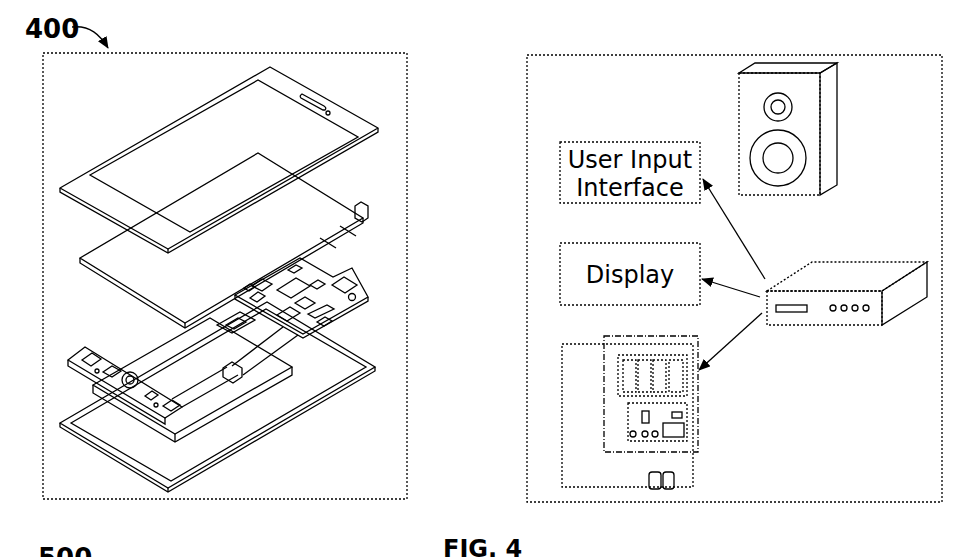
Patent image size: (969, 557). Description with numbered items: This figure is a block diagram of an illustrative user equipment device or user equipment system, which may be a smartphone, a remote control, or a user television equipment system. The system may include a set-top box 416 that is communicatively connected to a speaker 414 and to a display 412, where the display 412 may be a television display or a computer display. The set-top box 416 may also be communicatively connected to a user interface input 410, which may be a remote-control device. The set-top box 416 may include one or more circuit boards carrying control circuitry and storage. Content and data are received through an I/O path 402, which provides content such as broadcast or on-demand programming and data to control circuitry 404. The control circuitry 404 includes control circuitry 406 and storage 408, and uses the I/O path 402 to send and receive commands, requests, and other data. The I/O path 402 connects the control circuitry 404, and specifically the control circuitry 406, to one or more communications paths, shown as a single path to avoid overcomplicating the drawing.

The I/O path 402 is at (120, 390).
The control circuitry 404 is at (602, 429).
The control circuitry 406 is at (627, 409).
The storage 408 is at (616, 373).
The user interface input 410 is at (558, 171).
The display 412 is at (557, 272).
The speaker 414 is at (737, 131).
The set-top box 416 is at (850, 262).